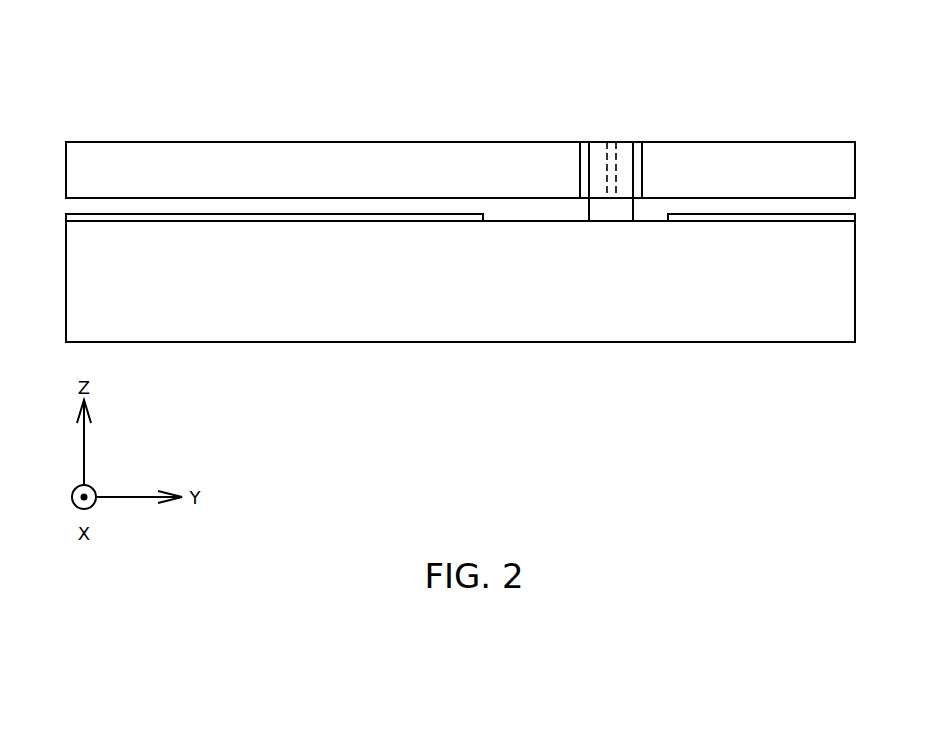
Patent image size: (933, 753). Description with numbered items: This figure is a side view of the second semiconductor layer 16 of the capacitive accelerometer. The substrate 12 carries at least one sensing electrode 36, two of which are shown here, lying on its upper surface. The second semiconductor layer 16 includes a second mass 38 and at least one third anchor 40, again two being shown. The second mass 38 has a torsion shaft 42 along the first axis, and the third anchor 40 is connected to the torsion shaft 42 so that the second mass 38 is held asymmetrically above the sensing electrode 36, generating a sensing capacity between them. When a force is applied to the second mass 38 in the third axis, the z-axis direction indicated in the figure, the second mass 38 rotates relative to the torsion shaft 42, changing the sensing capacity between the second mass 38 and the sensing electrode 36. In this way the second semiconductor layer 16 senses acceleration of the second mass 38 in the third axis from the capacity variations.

The substrate 12 is at (832, 285).
The second semiconductor layer 16 is at (460, 128).
The sensing electrode 36 is at (66, 214).
The second mass 38 is at (725, 148).
The third anchor 40 is at (623, 150).
The torsion shaft 42 is at (611, 145).